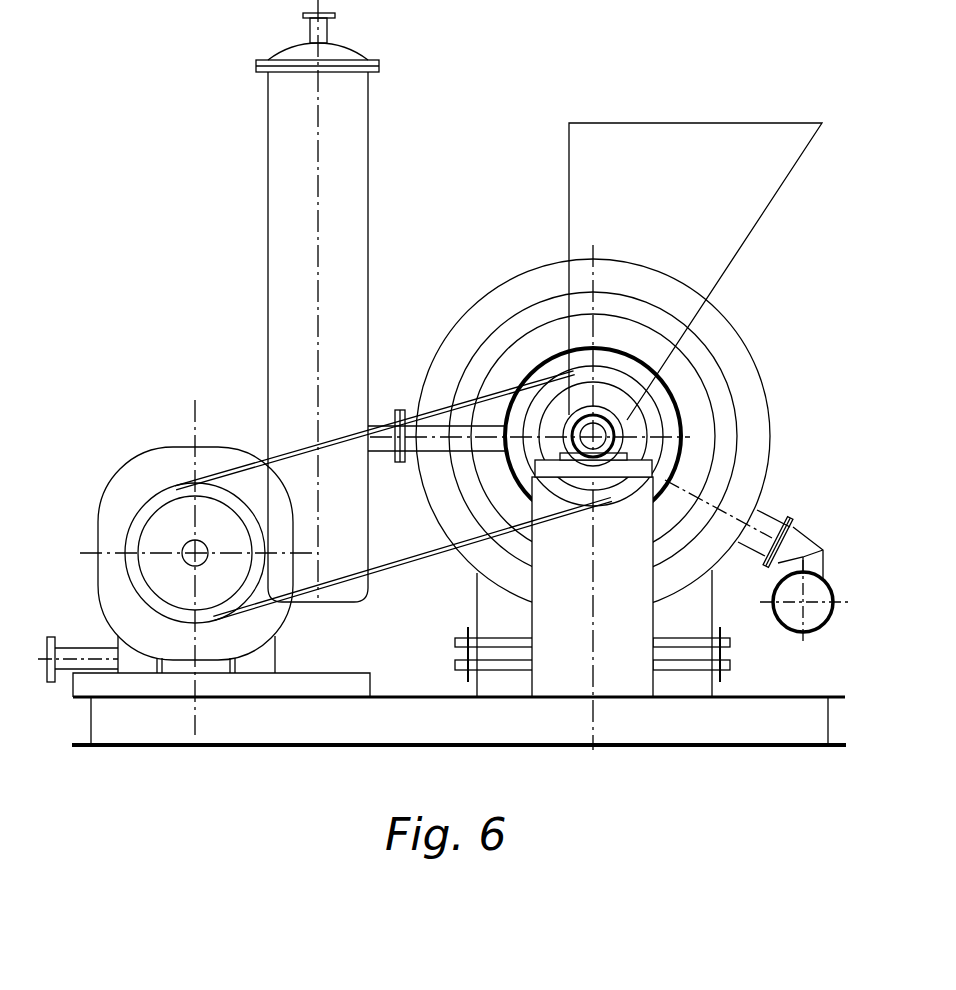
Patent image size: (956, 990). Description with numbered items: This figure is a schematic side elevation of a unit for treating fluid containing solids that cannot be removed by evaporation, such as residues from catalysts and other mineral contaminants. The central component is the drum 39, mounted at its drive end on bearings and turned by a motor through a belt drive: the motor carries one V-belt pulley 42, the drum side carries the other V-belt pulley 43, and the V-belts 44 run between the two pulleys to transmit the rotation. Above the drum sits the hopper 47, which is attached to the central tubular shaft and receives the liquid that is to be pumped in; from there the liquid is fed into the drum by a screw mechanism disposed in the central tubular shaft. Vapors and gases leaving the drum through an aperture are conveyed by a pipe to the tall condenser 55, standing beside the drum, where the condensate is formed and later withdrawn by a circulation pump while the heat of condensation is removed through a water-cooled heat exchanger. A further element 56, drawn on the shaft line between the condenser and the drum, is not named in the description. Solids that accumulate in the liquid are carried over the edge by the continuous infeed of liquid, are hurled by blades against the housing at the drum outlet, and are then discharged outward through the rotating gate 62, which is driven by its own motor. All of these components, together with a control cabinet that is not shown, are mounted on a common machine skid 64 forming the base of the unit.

The drum 39 is at (696, 384).
The V-belt pulley 42 is at (143, 578).
The V-belt pulley 43 is at (653, 430).
The V-belts 44 is at (240, 460).
The hopper 47 is at (663, 137).
The condenser 55 is at (358, 105).
The coupling flange 56 is at (378, 445).
The rotating gate 62 is at (833, 590).
The machine skid 64 is at (284, 733).